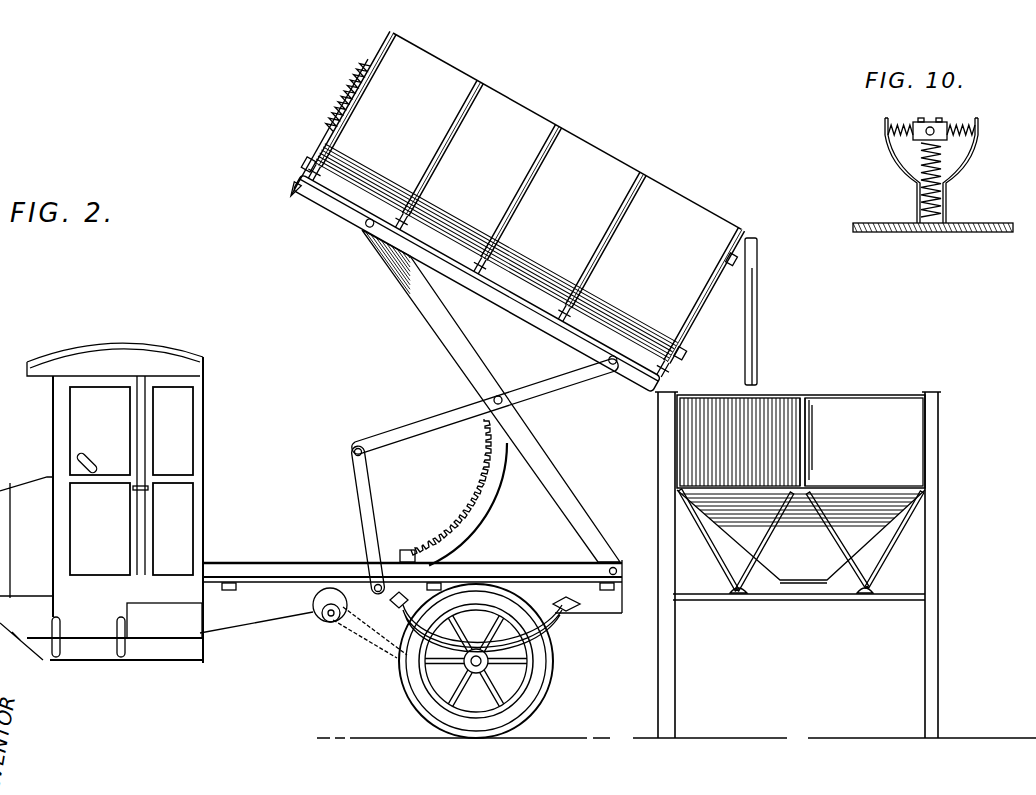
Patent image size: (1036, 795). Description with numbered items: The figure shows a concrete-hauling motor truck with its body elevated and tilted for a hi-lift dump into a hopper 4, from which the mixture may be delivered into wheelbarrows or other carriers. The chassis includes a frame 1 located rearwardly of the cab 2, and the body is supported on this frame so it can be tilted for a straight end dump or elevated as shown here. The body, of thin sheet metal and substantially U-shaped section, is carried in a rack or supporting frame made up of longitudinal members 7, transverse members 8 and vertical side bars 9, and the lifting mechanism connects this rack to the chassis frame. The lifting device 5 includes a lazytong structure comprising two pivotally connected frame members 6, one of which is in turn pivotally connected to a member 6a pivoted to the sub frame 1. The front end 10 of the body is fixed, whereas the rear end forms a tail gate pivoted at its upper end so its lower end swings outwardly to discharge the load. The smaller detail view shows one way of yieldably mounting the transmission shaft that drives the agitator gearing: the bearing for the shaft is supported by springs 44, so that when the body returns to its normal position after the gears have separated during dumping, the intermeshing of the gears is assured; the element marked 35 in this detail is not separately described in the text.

In FIG. 2, the frame 1 is at (292, 607).
In FIG. 10, the frame 1 is at (894, 229).
In FIG. 2, the cab 2 is at (115, 503).
In FIG. 2, the hopper 4 is at (798, 565).
In FIG. 2, the lifting device 5 is at (485, 516).
In FIG. 2, the frame members 6 is at (443, 426).
In FIG. 2, the member 6a is at (359, 498).
In FIG. 2, the longitudinal members 7 is at (477, 283).
In FIG. 2, the transverse members 8 is at (493, 261).
In FIG. 2, the vertical side bars 9 is at (533, 199).
In FIG. 2, the front end 10 is at (745, 235).
In FIG. 10, the adjusting nut block 35 is at (936, 129).
In FIG. 10, the springs 44 is at (941, 172).